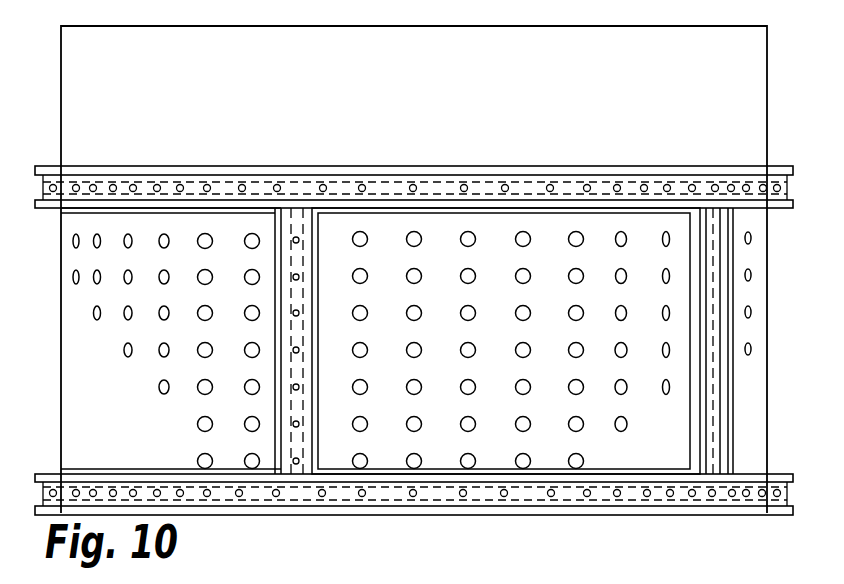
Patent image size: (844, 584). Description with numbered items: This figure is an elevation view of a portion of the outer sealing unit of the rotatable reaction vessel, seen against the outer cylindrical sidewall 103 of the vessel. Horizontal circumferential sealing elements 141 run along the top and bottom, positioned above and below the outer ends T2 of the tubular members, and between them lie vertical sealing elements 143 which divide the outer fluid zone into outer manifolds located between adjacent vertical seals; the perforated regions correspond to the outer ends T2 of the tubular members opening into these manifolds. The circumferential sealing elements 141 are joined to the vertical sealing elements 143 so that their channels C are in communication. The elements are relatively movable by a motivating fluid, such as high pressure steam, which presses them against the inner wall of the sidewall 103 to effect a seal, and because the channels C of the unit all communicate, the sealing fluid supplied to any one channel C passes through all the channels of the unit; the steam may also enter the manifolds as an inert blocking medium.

The outer cylindrical sidewall 103 is at (763, 108).
The circumferential sealing element 141 is at (43, 168).
The vertical sealing element 143 is at (262, 205).
The rail aperture A is at (505, 188).
The channel C is at (289, 476).
The outer end of tubular member T2 is at (462, 415).